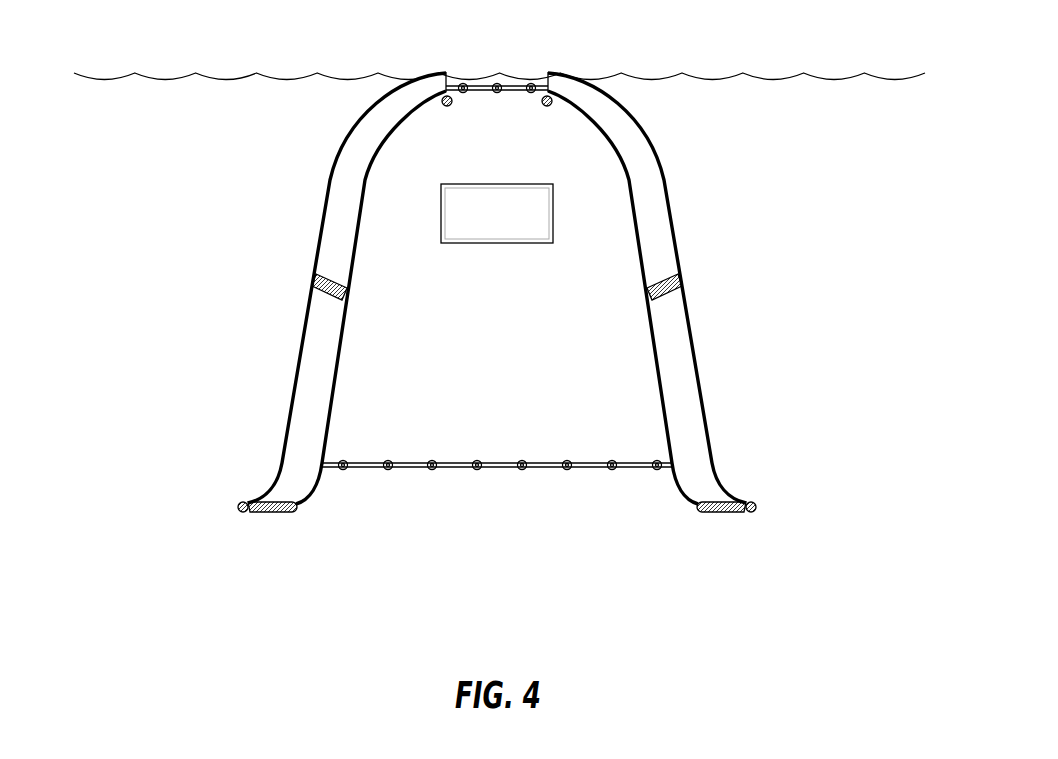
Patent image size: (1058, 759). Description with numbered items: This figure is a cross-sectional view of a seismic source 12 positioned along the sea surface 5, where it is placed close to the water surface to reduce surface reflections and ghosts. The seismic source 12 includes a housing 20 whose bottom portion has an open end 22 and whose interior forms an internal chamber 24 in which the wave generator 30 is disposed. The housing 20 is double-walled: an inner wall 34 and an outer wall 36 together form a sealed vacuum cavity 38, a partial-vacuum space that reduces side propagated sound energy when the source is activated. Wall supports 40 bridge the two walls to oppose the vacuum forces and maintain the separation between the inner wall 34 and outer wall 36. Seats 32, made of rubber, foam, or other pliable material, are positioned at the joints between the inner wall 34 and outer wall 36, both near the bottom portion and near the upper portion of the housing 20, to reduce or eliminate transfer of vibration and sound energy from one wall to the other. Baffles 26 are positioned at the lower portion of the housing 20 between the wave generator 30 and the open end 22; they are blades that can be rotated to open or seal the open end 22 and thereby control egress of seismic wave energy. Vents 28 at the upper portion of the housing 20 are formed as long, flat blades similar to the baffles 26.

The sea surface 5 is at (193, 73).
The seismic source 12 is at (694, 147).
The housing 20 is at (351, 124).
The open end 22 is at (513, 525).
The internal chamber 24 is at (485, 352).
The baffles 26 is at (418, 460).
The vents 28 is at (519, 87).
The wave generator 30 is at (485, 228).
The seat 32 is at (451, 107).
The inner wall 34 is at (657, 395).
The outer wall 36 is at (707, 415).
The vacuum cavity 38 is at (663, 292).
The wall supports 40 is at (333, 292).